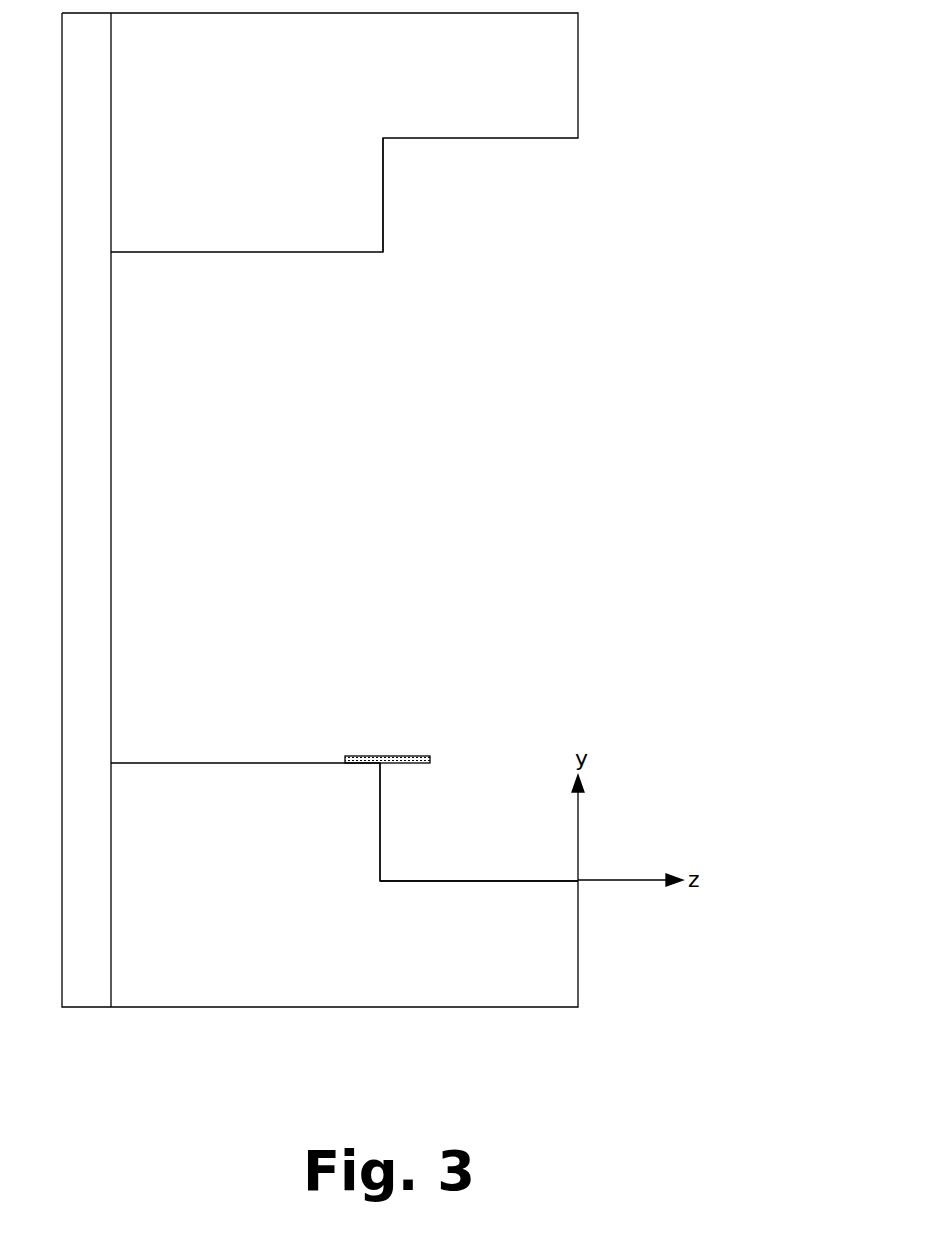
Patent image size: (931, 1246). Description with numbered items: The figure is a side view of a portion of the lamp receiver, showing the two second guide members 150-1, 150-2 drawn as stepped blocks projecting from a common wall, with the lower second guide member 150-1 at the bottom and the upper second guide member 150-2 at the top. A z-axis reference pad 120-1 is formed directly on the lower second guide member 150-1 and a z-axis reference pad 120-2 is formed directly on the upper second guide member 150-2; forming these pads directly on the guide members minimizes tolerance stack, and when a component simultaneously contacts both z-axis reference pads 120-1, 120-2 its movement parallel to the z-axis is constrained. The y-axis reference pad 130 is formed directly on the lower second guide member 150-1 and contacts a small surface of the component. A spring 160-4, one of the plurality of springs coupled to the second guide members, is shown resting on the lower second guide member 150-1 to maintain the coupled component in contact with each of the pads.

The second guide member 150-1 is at (320, 917).
The second guide member 150-2 is at (326, 117).
The z-axis reference pad 120-1 is at (382, 823).
The z-axis reference pad 120-2 is at (384, 200).
The y-axis reference pad 130 is at (403, 883).
The spring 160-4 is at (387, 756).